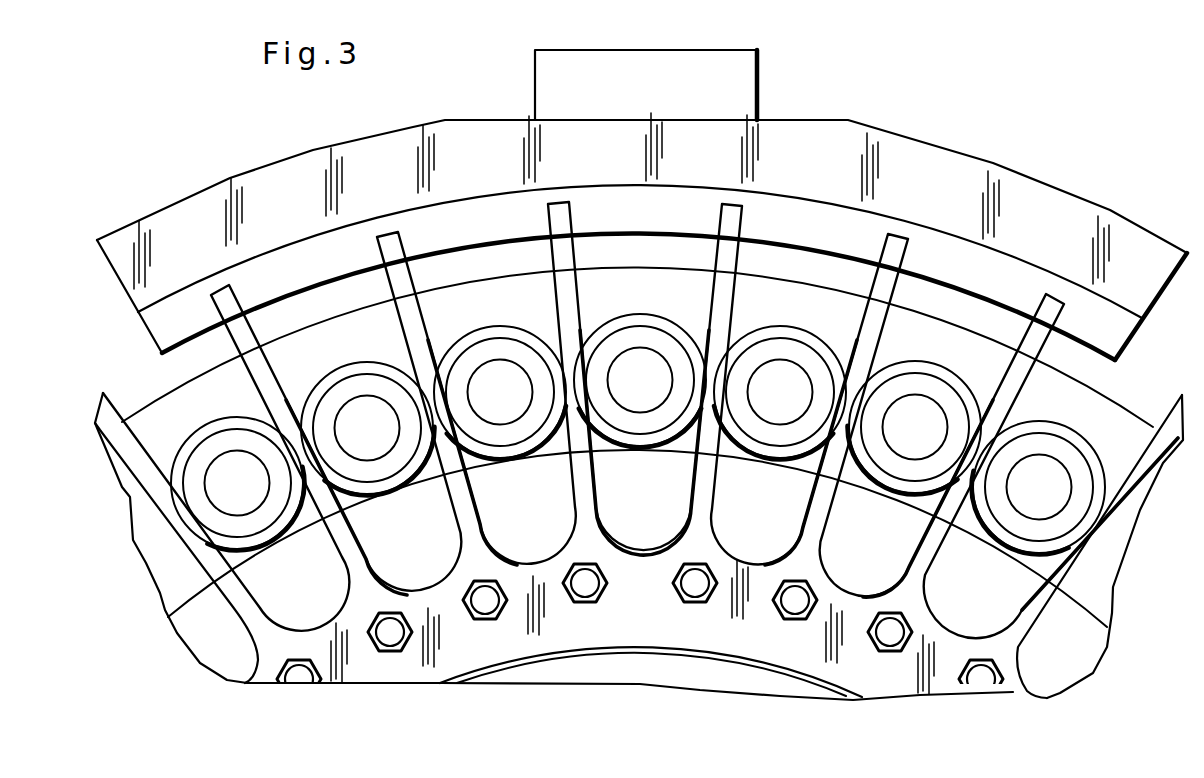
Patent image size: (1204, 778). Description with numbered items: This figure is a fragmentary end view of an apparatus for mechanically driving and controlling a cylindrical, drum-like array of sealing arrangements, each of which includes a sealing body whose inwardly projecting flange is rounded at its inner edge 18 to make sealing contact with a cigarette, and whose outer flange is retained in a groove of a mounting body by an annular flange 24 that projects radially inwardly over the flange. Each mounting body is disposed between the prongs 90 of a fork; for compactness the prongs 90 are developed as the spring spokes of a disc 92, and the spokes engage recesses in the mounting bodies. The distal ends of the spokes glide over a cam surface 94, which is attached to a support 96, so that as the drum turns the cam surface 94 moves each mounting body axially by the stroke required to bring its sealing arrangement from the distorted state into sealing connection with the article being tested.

The rounded inner edge 18 is at (478, 366).
The annular flange 24 is at (518, 327).
The prongs 90 is at (567, 221).
The disc 92 is at (643, 632).
The cam surface 94 is at (818, 236).
The support 96 is at (821, 171).